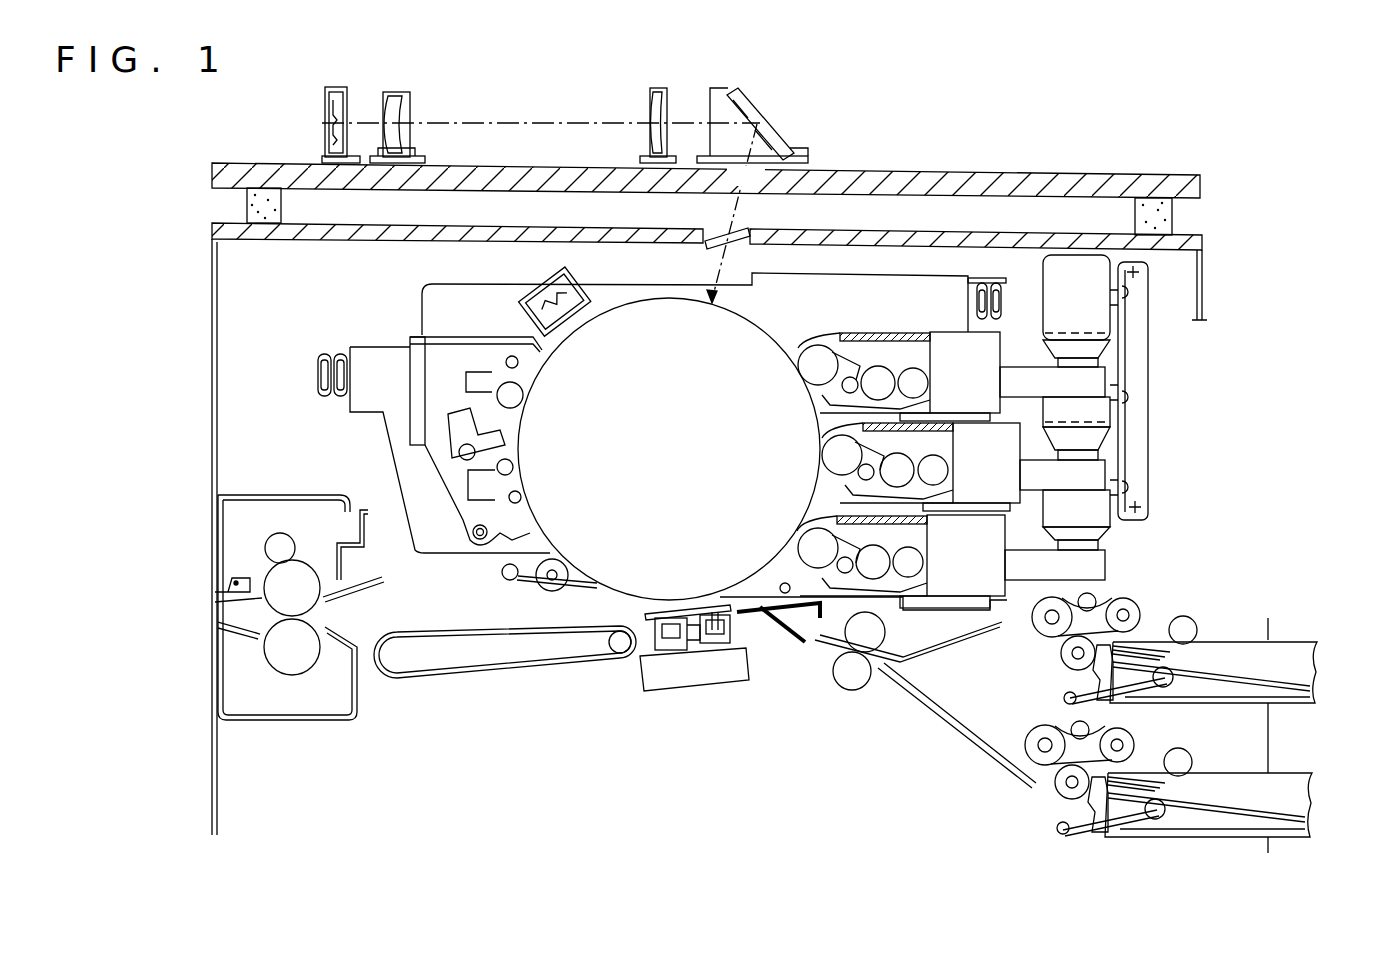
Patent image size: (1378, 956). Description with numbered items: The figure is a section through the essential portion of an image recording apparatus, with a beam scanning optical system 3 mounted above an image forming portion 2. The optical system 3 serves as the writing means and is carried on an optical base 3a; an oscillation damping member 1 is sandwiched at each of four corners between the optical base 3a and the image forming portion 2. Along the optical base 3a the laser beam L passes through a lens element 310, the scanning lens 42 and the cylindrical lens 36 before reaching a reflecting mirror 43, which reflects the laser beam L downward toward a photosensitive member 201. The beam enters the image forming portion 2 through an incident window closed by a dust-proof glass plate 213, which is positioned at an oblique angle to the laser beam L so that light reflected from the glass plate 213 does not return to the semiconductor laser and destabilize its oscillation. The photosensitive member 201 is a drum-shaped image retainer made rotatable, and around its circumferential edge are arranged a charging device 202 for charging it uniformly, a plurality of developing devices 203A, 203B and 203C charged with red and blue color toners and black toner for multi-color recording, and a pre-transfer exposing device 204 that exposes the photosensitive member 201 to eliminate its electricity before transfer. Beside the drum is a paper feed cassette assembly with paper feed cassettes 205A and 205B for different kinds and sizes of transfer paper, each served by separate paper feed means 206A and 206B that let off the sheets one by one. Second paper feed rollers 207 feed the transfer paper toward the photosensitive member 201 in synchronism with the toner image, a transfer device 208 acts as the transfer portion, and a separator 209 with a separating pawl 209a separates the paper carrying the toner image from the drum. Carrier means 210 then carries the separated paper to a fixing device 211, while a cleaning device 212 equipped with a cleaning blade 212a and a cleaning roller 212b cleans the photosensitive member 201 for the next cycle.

The oscillation damping member 1 is at (247, 212).
The image forming portion 2 is at (1165, 378).
The beam scanning optical system 3 is at (878, 48).
The optical base 3a is at (1100, 175).
The cylindrical lens 36 is at (662, 88).
The scanning lens 42 is at (397, 92).
The reflecting mirror 43 is at (780, 128).
The lens 310 is at (332, 87).
The laser beam L is at (505, 121).
The photosensitive member 201 is at (775, 330).
The charging device 202 is at (540, 287).
The developing device 203A is at (800, 386).
The developing device 203B is at (810, 468).
The developing device 203C is at (780, 539).
The pre-transfer exposing device 204 is at (770, 592).
The paper feed cassette 205A is at (1230, 645).
The paper feed cassette 205B is at (1225, 775).
The paper feed means 206A is at (1130, 598).
The paper feed means 206B is at (1048, 806).
The second paper feed rollers 207 is at (865, 690).
The transfer device 208 is at (735, 628).
The separator 209 is at (655, 648).
The separating pawl 209a is at (530, 585).
The carrier means 210 is at (513, 673).
The fixing device 211 is at (300, 722).
The cleaning device 212 is at (472, 422).
The cleaning blade 212a is at (520, 442).
The cleaning roller 212b is at (523, 398).
The dust-proof glass plate 213 is at (742, 234).